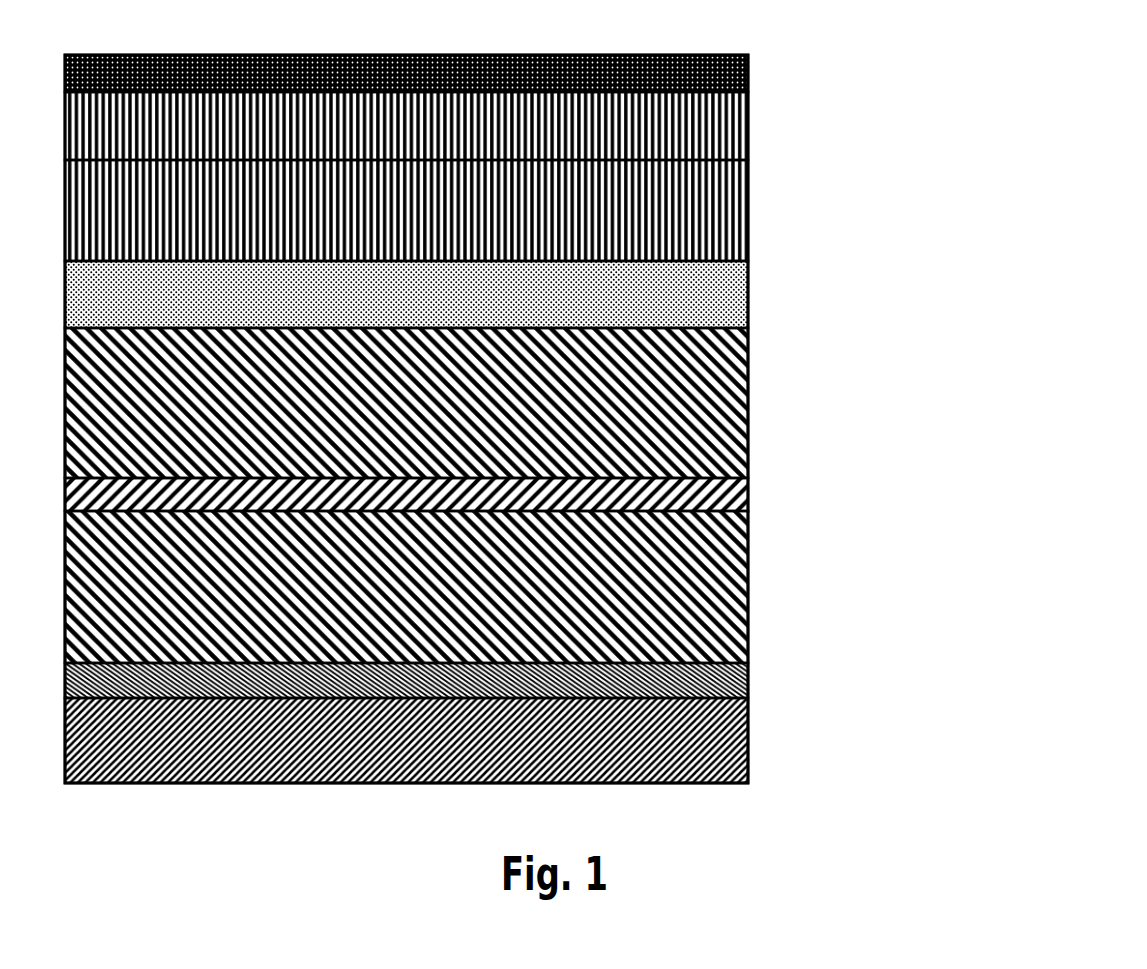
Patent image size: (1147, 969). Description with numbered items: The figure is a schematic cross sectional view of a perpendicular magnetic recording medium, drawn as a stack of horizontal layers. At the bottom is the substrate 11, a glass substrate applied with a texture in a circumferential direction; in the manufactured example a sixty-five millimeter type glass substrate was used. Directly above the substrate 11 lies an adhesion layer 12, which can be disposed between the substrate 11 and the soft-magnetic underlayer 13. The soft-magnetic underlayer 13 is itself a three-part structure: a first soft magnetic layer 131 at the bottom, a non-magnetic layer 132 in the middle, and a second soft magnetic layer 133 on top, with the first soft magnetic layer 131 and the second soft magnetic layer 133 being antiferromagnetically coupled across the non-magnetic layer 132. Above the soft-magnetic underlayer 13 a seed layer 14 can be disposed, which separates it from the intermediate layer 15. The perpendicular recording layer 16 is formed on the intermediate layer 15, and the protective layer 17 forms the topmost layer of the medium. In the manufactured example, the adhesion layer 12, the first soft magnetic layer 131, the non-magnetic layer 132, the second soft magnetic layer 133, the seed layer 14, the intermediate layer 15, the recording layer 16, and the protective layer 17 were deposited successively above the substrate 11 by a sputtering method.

The substrate 11 is at (740, 740).
The adhesion layer 12 is at (740, 668).
The soft-magnetic underlayer 13 is at (601, 495).
The first soft magnetic layer 131 is at (528, 585).
The non-magnetic layer 132 is at (740, 483).
The second soft magnetic layer 133 is at (740, 400).
The seed layer 14 is at (740, 300).
The intermediate layer 15 is at (740, 208).
The perpendicular recording layer 16 is at (740, 123).
The protective layer 17 is at (740, 70).